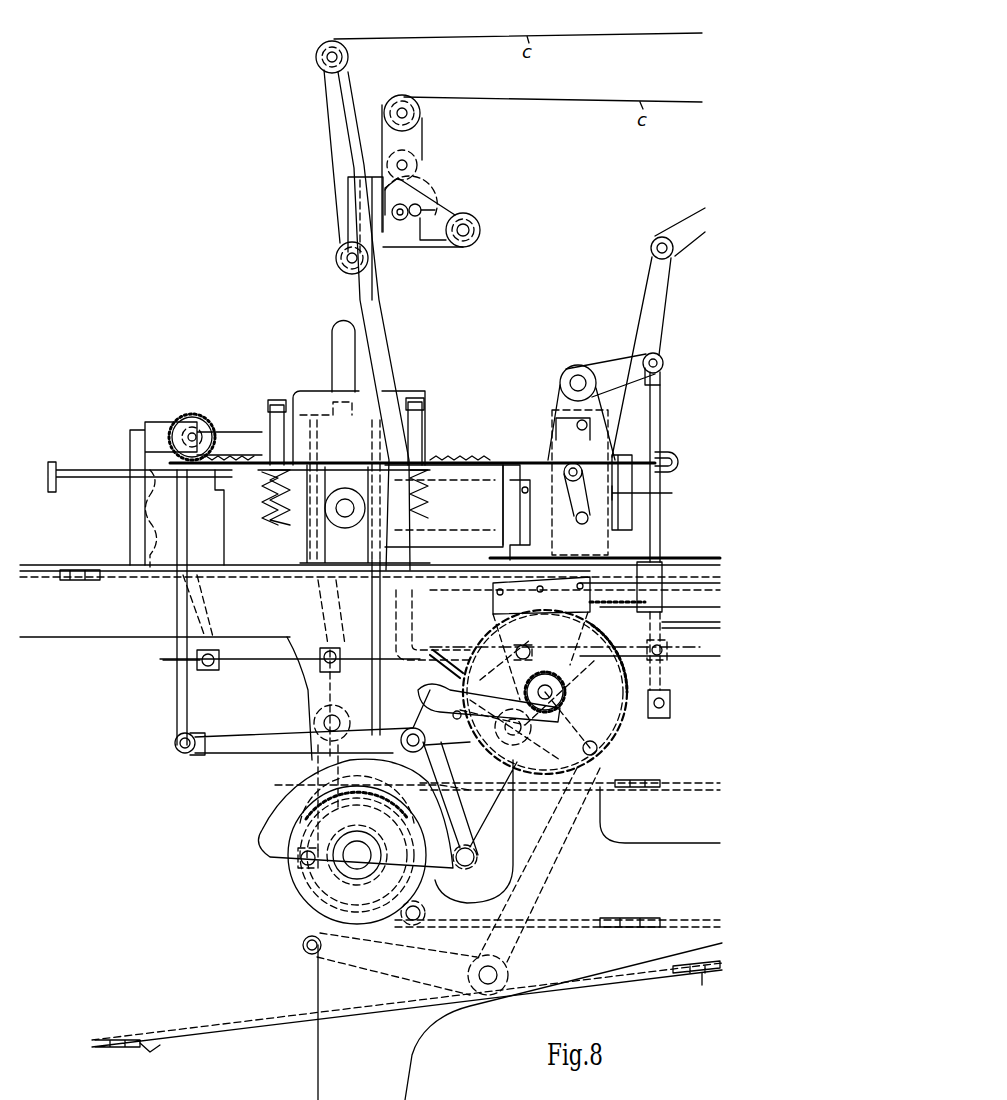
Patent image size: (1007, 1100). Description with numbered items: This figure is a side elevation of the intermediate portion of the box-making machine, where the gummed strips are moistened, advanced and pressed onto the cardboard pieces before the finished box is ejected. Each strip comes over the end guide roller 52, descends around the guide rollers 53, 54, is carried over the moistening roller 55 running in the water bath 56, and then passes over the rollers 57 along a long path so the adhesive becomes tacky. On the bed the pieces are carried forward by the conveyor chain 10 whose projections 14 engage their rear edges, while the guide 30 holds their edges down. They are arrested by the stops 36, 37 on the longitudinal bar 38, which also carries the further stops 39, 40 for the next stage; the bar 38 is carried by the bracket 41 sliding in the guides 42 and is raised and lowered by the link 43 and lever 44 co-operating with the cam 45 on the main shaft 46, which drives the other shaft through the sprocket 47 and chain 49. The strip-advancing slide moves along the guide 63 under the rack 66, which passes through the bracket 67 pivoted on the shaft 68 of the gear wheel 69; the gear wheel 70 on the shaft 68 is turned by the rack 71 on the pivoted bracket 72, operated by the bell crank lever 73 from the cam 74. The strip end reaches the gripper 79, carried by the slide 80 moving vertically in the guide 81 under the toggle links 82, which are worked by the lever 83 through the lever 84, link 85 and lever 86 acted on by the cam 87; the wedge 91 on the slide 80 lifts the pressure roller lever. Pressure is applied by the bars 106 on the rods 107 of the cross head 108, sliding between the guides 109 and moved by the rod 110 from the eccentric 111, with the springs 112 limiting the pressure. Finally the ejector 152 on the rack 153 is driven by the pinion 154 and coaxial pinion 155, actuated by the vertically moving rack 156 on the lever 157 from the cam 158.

The end guide roller 52 is at (340, 47).
The rollers 57 is at (420, 120).
The moistening roller 55 is at (425, 195).
The guide roller 54 is at (481, 233).
The water bath 56 is at (400, 235).
The guide roller 53 is at (336, 262).
The lever 84 is at (612, 345).
The link 85 is at (656, 521).
The toggle links 82 is at (577, 422).
The slide 80 is at (565, 432).
The lever 83 is at (565, 441).
The gripper 79 is at (568, 483).
The wedge 91 is at (682, 465).
The guide 81 is at (654, 492).
The stop 37 is at (627, 503).
The guide 63 is at (708, 560).
The stop 36 is at (514, 558).
The bars 106 is at (470, 532).
The guides 109 is at (300, 458).
The rods 107 is at (436, 440).
The cross head 108 is at (268, 425).
The springs 112 is at (436, 483).
The rack 153 is at (488, 455).
The pinion 154 is at (201, 418).
The coaxial pinion 155 is at (168, 420).
The ejector 152 is at (58, 484).
The vertically moving rack 156 is at (189, 518).
The guide 30 is at (113, 565).
The conveyor chain 10 is at (82, 576).
The projections 14 is at (148, 1044).
The stop 39 is at (197, 590).
The stop 40 is at (182, 623).
The guides 42 is at (422, 625).
The longitudinal bar 38 is at (268, 661).
The rod 110 is at (335, 687).
The lever 157 is at (253, 741).
The lever 44 is at (428, 744).
The bracket 41 is at (447, 682).
The link 43 is at (452, 706).
The bracket 67 is at (568, 668).
The shaft 68 is at (553, 692).
The gear wheel 70 is at (548, 664).
The rack 66 is at (620, 630).
The gear wheel 69 is at (621, 731).
The rack 71 is at (472, 712).
The bracket 72 is at (552, 742).
The chain 49 is at (656, 781).
The sprocket 47 is at (366, 790).
The eccentric 111 is at (354, 783).
The cam 158 is at (262, 830).
The main shaft 46 is at (368, 855).
The cam 45 is at (305, 873).
The lever 86 is at (480, 808).
The cam 74 is at (305, 922).
The cam 87 is at (392, 928).
The bell crank lever 73 is at (550, 863).